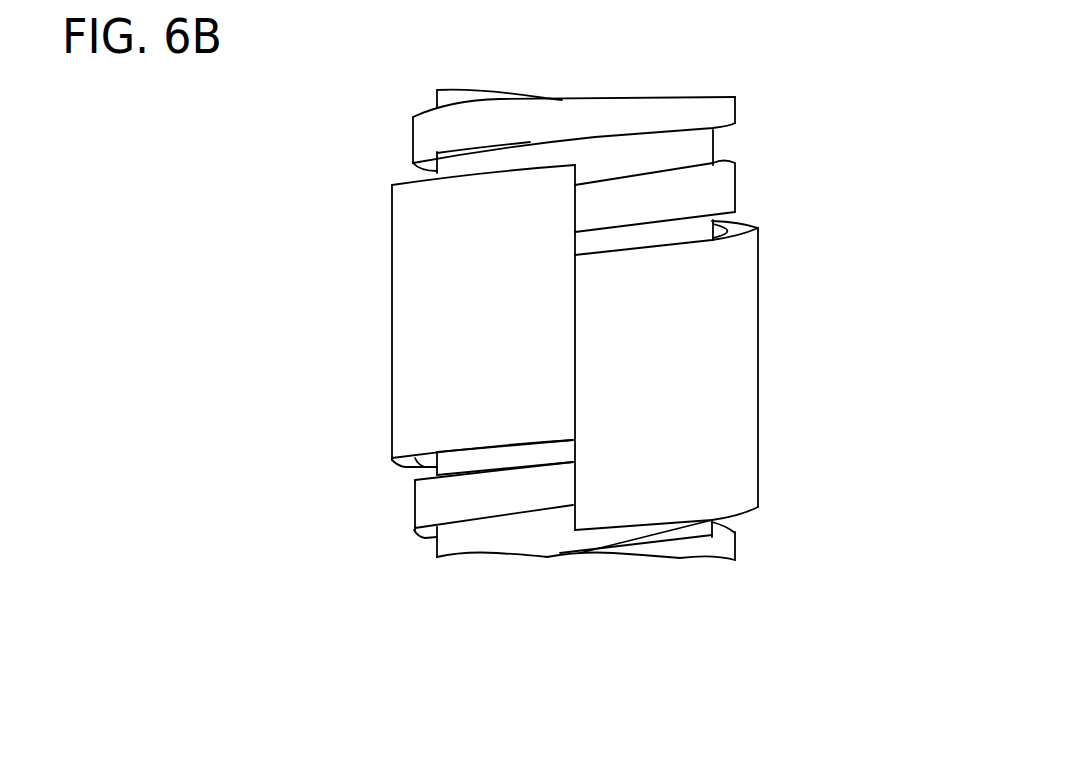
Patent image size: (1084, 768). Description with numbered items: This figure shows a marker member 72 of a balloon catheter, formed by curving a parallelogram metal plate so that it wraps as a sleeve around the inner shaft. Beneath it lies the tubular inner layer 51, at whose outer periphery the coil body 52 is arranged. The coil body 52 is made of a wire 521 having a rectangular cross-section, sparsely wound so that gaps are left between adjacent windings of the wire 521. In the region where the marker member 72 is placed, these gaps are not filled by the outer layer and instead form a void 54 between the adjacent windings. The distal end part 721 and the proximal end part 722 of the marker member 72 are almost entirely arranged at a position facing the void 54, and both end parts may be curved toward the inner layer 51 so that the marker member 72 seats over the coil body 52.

The void 54 is at (700, 150).
The marker member 72 is at (659, 366).
The distal end part 721 is at (747, 245).
The proximal end part 722 is at (733, 508).
The coil body 52 is at (410, 560).
The wire 521 is at (423, 503).
The inner layer 51 is at (520, 540).